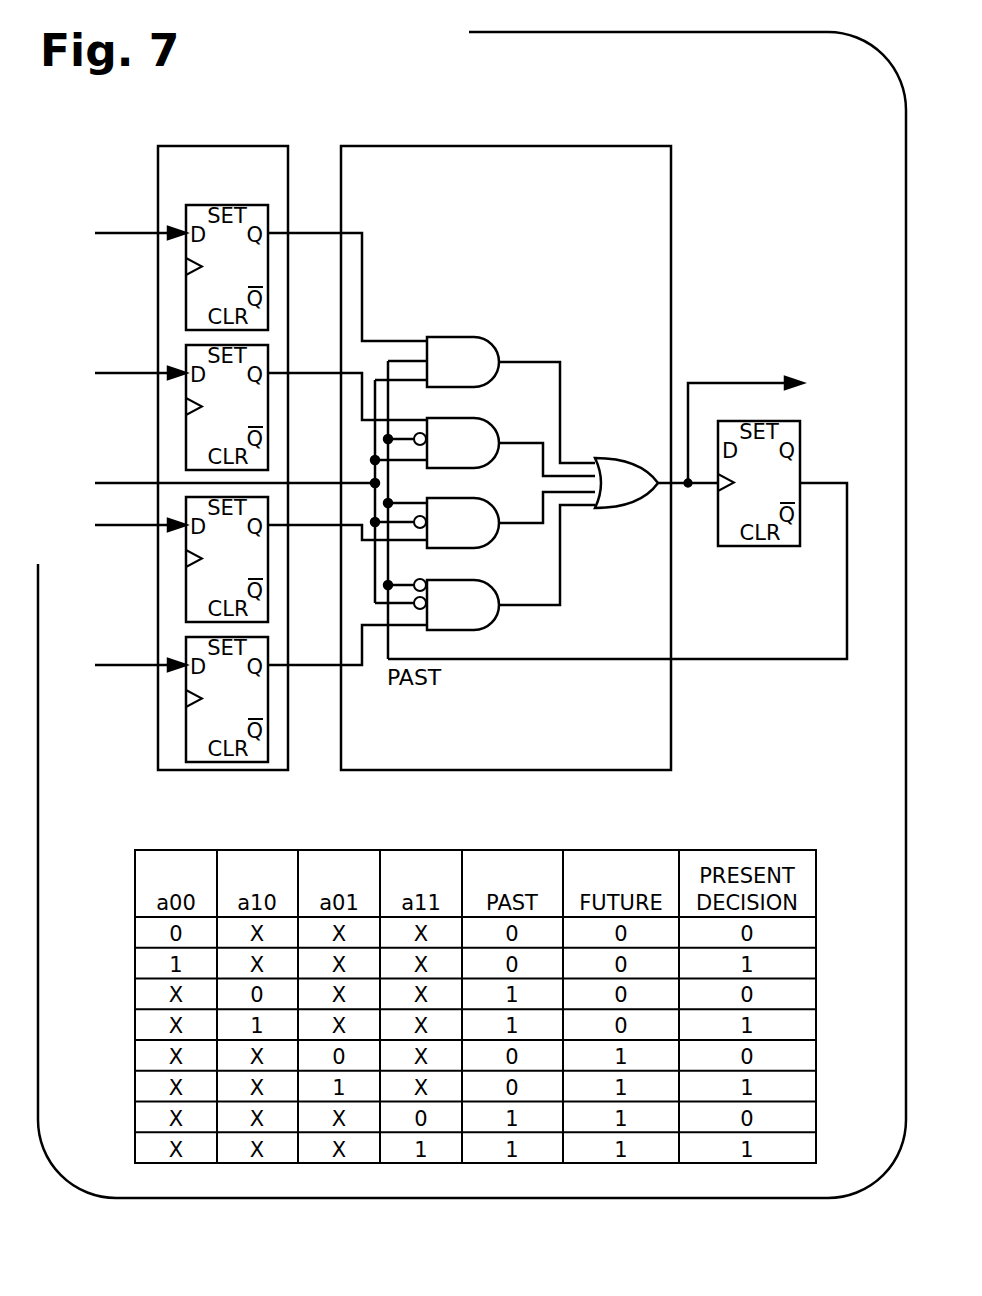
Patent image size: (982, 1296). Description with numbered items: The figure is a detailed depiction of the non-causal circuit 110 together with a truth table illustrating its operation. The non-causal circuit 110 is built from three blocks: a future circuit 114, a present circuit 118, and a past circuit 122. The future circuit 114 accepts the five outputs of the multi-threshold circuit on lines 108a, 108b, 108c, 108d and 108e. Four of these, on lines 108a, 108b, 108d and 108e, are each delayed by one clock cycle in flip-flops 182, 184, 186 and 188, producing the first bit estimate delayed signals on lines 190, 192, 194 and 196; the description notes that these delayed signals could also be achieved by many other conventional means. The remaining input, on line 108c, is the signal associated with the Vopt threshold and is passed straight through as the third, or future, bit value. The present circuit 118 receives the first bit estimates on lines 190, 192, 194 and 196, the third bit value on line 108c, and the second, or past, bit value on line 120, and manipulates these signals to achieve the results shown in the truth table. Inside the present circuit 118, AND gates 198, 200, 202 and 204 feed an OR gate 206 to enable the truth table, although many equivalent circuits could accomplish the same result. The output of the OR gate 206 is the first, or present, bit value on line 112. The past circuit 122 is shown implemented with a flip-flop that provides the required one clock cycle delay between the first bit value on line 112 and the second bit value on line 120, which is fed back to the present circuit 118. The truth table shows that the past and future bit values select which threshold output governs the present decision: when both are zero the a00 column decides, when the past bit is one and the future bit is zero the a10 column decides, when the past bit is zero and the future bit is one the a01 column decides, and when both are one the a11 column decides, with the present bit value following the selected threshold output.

The non-causal circuit 110 is at (775, 172).
The line carrying first bit value 112 is at (742, 382).
The future circuit 114 is at (234, 146).
The present circuit 118 is at (617, 146).
The line carrying second bit value 120 is at (741, 658).
The past circuit 122 is at (742, 495).
The line carrying a00 multi-threshold output 108a is at (135, 231).
The line carrying a10 multi-threshold output 108b is at (135, 371).
The line carrying Vopt threshold signal 108c is at (135, 481).
The line carrying a01 multi-threshold output 108d is at (135, 523).
The line carrying a11 multi-threshold output 108e is at (135, 663).
The flip-flop 182 is at (210, 279).
The flip-flop 184 is at (210, 419).
The flip-flop 186 is at (210, 571).
The flip-flop 188 is at (210, 711).
The line carrying first bit estimate delayed signal 190 is at (322, 231).
The line carrying first bit estimate delayed signal 192 is at (322, 371).
The line carrying first bit estimate delayed signal 194 is at (320, 527).
The line carrying first bit estimate delayed signal 196 is at (320, 667).
The AND gate 198 is at (445, 374).
The AND gate 200 is at (445, 455).
The AND gate 202 is at (445, 535).
The AND gate 204 is at (445, 617).
The OR gate 206 is at (610, 495).